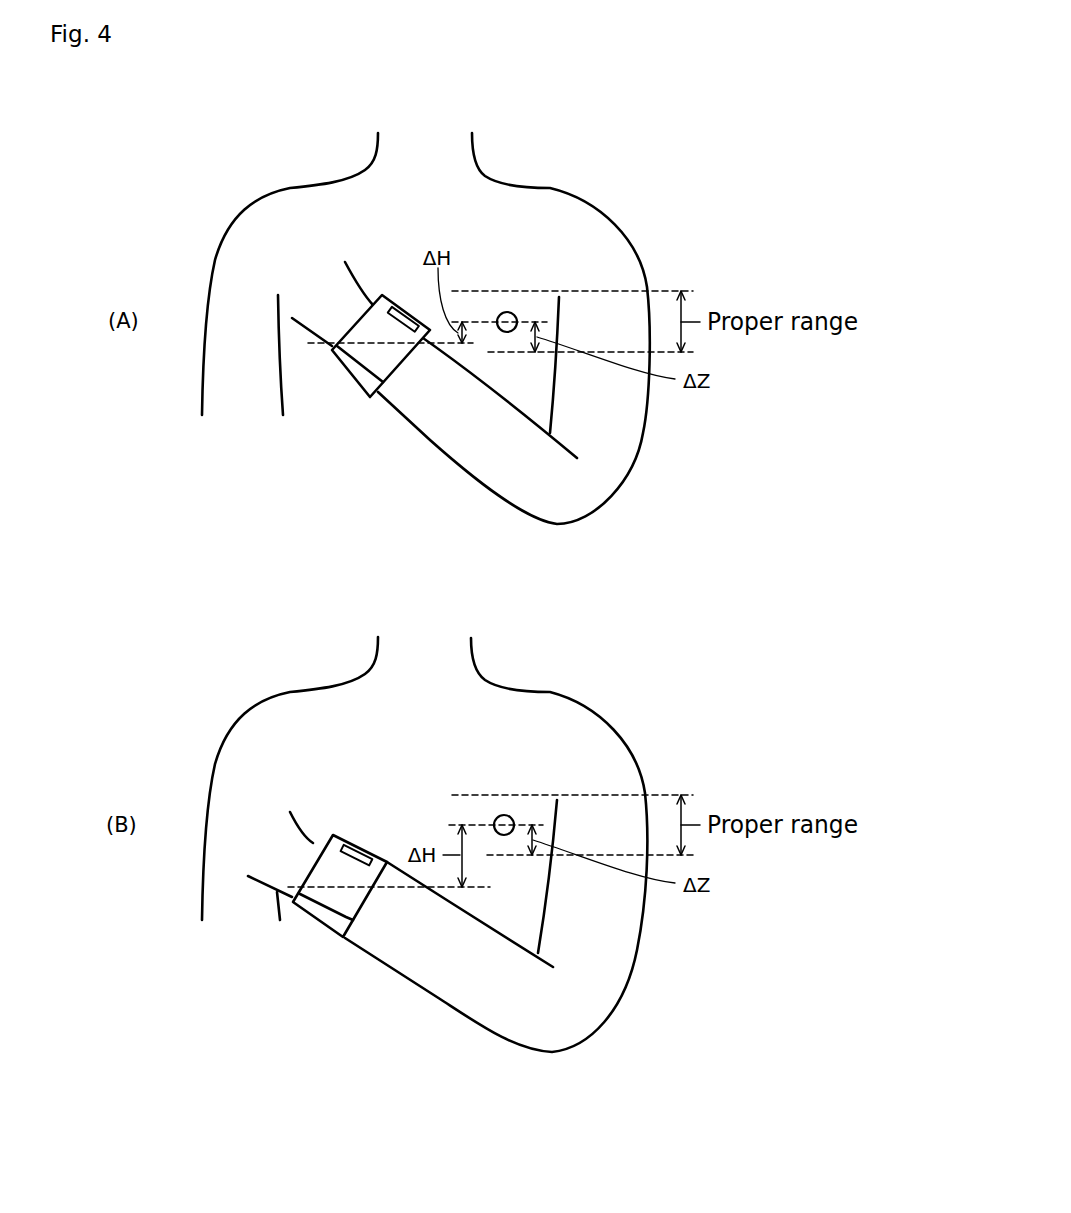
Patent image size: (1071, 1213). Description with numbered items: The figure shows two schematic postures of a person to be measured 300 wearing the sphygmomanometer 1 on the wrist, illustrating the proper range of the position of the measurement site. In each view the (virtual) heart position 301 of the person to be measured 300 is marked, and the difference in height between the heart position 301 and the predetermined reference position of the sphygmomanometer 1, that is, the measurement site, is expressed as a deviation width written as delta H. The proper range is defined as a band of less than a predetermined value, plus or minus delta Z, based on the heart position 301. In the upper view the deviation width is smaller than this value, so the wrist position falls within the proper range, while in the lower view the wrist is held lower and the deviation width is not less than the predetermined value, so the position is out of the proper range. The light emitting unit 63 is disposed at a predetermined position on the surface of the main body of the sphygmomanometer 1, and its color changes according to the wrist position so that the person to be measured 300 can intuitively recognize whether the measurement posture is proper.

The sphygmomanometer 1 is at (340, 392).
The light emitting unit 63 is at (407, 310).
The person to be measured 300 is at (573, 168).
The heart position 301 is at (508, 312).